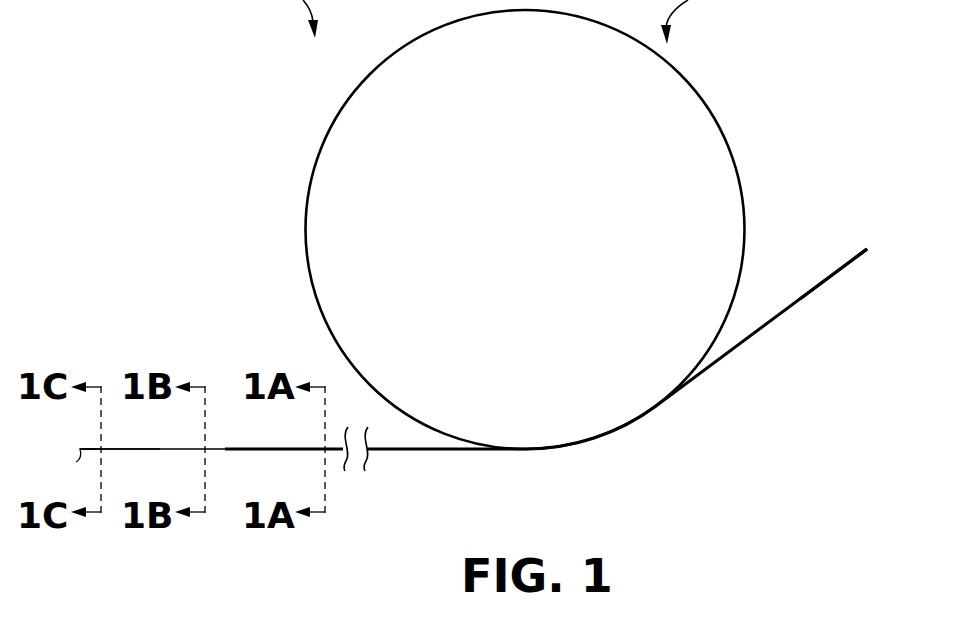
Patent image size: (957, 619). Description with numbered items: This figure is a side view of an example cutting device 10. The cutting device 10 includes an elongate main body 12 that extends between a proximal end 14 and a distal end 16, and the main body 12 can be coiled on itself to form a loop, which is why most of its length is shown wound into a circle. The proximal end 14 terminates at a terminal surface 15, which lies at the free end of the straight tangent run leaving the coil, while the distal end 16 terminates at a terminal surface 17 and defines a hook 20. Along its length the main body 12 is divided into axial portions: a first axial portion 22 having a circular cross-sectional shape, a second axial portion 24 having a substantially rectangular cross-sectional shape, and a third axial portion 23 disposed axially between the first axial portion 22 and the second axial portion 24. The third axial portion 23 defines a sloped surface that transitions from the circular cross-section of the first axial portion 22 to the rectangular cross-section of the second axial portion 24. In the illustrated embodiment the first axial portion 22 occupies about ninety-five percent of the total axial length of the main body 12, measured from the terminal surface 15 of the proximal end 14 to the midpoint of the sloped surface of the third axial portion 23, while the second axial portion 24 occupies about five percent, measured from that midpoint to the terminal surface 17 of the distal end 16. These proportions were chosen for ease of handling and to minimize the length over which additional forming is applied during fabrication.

The cutting device 10 is at (65, 611).
The main body 12 is at (733, 350).
The proximal end 14 is at (840, 264).
The terminal surface 15 is at (866, 254).
The distal end 16 is at (120, 448).
The terminal surface 17 is at (73, 463).
The hook 20 is at (62, 445).
The first axial portion 22 is at (406, 480).
The third axial portion 23 is at (226, 428).
The second axial portion 24 is at (119, 475).